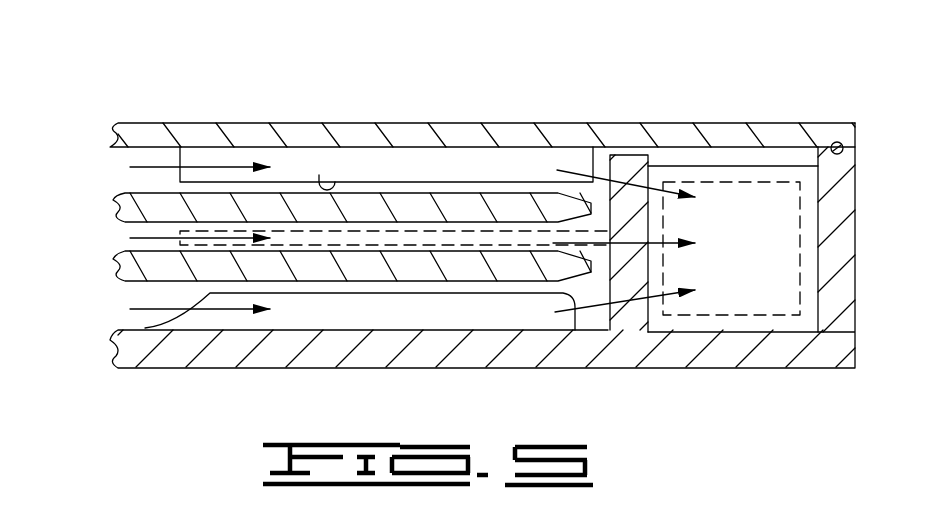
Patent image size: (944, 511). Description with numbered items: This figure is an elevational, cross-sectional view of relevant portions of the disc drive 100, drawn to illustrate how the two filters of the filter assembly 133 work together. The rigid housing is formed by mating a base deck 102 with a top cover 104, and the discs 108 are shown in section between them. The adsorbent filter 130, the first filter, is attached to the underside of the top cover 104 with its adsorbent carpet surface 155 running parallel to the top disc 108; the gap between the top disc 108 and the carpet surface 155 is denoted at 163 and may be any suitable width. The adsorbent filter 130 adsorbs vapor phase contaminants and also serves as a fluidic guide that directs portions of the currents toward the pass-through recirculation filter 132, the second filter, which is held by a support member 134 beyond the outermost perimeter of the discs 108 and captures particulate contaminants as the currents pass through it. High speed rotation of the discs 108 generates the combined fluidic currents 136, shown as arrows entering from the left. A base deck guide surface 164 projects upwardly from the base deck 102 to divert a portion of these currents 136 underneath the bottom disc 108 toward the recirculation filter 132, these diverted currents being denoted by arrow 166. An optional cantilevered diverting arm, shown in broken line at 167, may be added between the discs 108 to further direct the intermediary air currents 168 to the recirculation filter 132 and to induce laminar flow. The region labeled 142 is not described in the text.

The disc drive 100 is at (172, 72).
The base deck 102 is at (108, 345).
The top cover 104 is at (468, 130).
The discs 108 is at (108, 205).
The adsorbent filter 130 is at (367, 163).
The recirculation filter 132 is at (758, 313).
The filter assembly 133 is at (719, 51).
The support member 134 is at (623, 167).
The combined fluidic currents 136 is at (210, 167).
The mixing chamber 142 is at (657, 235).
The adsorbent carpet surface 155 is at (319, 178).
The gap 163 is at (147, 176).
The base deck guide surface 164 is at (387, 313).
The diverted currents 166 is at (595, 303).
The cantilevered diverting arm 167 is at (327, 246).
The intermediary air currents 168 is at (658, 240).